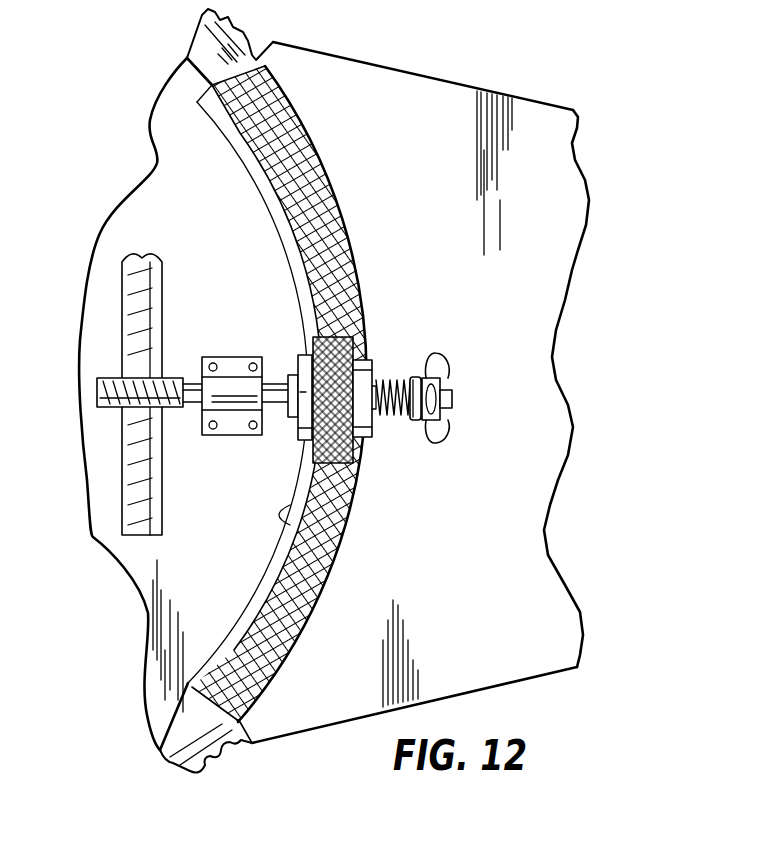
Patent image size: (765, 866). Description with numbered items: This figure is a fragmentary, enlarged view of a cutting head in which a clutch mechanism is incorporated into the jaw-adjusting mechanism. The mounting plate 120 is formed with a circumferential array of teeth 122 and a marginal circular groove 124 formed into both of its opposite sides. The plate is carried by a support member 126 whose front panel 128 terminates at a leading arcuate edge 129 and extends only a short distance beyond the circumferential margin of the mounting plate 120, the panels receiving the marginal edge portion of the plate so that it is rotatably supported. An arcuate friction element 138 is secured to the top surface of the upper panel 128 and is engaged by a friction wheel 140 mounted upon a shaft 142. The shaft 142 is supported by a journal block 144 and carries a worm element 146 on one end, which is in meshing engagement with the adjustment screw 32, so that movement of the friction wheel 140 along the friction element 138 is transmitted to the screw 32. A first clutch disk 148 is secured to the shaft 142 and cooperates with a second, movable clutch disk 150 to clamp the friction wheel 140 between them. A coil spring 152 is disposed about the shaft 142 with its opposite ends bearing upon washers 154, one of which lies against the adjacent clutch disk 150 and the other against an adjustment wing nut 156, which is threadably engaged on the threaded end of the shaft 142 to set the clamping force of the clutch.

The adjustment screw 32 is at (163, 293).
The mounting plate 120 is at (140, 697).
The teeth 122 is at (208, 767).
The marginal circular groove 124 is at (268, 40).
The support member 126 is at (575, 102).
The front panel 128 is at (552, 623).
The leading arcuate edge 129 is at (330, 546).
The arcuate friction element 138 is at (328, 248).
The friction wheel 140 is at (356, 314).
The shaft 142 is at (193, 403).
The journal block 144 is at (233, 364).
The worm element 146 is at (96, 380).
The first clutch disk 148 is at (307, 412).
The second clutch disk 150 is at (378, 437).
The coil spring 152 is at (396, 378).
The washers 154 is at (416, 422).
The adjustment wing nut 156 is at (447, 367).